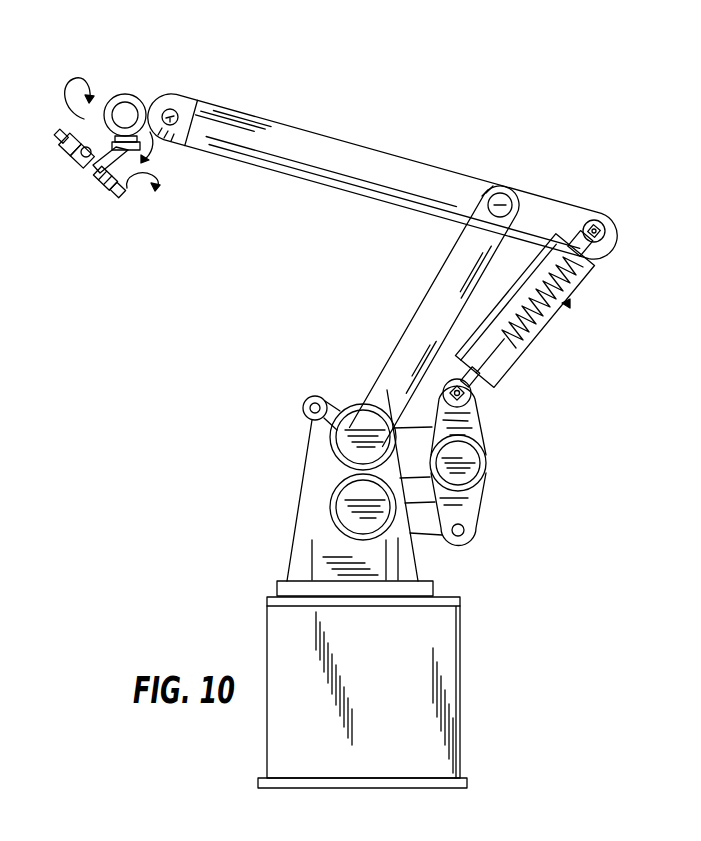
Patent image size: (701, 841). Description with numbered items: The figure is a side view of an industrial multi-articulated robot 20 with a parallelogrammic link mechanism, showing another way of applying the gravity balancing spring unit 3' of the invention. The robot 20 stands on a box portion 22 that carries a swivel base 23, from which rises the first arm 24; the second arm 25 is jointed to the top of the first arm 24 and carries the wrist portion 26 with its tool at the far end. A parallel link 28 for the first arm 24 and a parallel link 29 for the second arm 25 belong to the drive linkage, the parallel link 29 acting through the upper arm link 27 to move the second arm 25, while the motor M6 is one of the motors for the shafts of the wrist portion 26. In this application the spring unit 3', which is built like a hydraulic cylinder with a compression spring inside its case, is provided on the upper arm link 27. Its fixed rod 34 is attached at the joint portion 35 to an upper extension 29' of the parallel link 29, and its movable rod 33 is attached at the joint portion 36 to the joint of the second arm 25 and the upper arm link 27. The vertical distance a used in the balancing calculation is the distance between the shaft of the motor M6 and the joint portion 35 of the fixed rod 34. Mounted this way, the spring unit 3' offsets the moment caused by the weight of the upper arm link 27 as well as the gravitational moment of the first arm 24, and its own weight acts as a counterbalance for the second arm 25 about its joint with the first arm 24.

The multi-articulated robot 20 is at (560, 505).
The box portion 22 is at (448, 653).
The swivel base 23 is at (432, 590).
The first arm 24 is at (437, 290).
The second arm 25 is at (365, 152).
The wrist portion 26 is at (147, 103).
The upper arm link 27 is at (547, 333).
The parallel link for the first arm 28 is at (315, 442).
The parallel link for the second arm 29 is at (485, 465).
The upper extension of the parallel link 29' is at (475, 475).
The movable rod 33 is at (605, 253).
The fixed rod 34 is at (477, 386).
The joint portion of the fixed rod 35 is at (453, 388).
The joint portion of the movable rod 36 is at (607, 215).
The motor M6 is at (468, 458).
The spring unit 3' is at (606, 292).